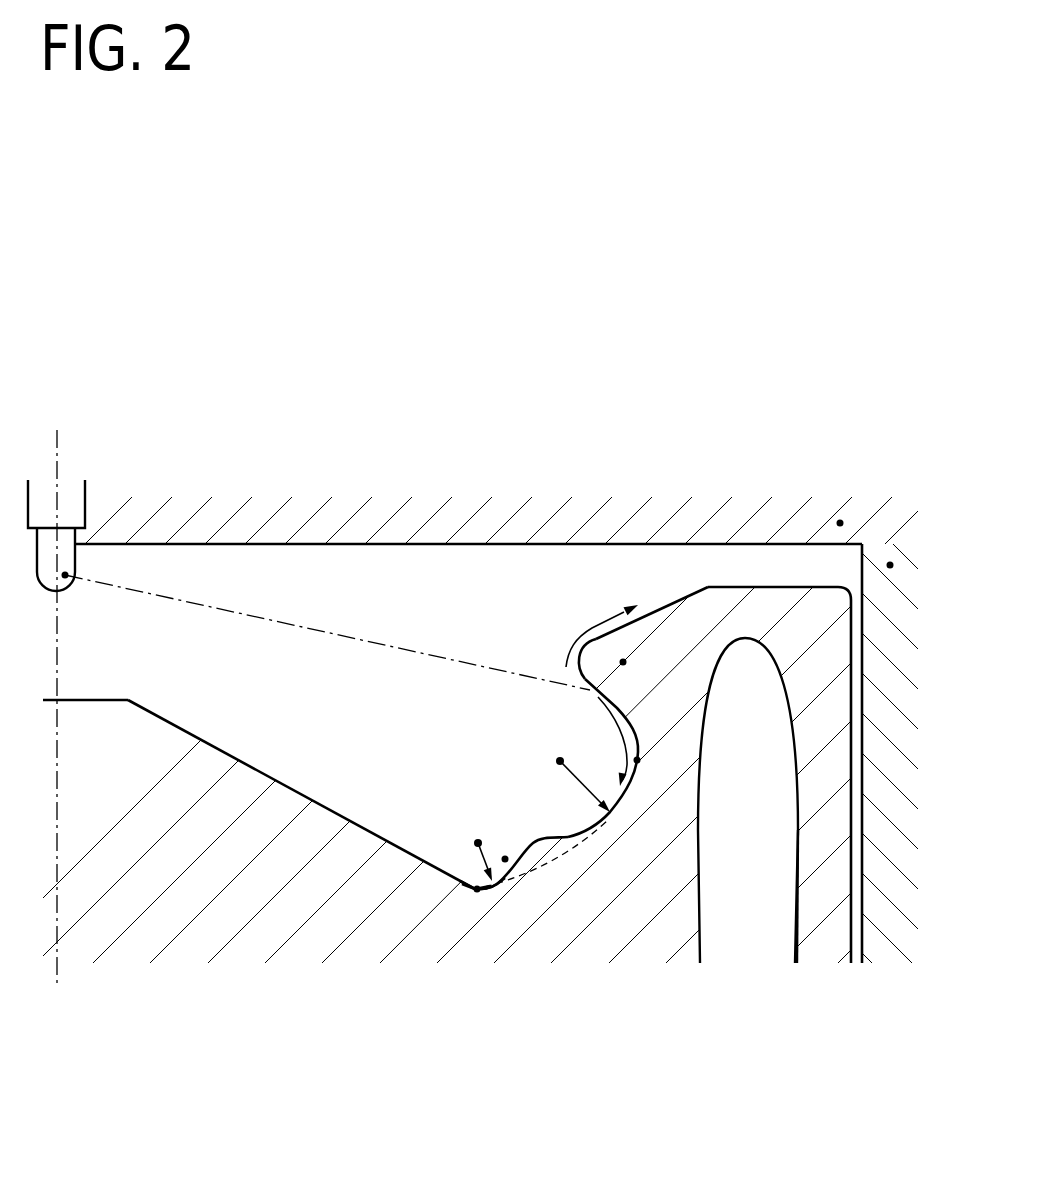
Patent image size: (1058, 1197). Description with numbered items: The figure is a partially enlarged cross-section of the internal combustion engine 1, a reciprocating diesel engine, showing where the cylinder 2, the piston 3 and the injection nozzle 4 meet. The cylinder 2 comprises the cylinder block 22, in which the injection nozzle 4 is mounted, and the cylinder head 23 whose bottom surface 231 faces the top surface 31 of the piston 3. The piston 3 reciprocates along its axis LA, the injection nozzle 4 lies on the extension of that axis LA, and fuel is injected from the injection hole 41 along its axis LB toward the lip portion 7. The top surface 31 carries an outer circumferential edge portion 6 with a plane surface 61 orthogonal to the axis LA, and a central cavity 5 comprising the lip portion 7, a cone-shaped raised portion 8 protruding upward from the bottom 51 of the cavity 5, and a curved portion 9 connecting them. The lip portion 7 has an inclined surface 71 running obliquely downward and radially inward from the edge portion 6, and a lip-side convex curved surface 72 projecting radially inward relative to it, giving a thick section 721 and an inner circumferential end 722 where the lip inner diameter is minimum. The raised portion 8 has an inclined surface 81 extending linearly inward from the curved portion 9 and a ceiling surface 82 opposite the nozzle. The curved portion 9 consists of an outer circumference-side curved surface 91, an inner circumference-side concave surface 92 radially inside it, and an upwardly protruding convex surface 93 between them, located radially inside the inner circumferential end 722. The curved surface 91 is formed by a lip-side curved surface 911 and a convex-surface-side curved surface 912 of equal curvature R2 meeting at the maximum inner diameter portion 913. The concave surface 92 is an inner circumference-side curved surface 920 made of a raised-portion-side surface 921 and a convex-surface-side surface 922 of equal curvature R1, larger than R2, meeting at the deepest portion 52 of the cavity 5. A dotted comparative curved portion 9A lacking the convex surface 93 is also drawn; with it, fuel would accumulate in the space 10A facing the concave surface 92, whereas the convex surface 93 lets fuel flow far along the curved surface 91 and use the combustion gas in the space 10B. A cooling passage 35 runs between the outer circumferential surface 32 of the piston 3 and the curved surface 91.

The internal combustion engine 1 is at (300, 382).
The cylinder 2 is at (503, 708).
The cylinder block 22 is at (890, 565).
The cylinder head 23 is at (840, 523).
The bottom surface 231 is at (555, 543).
The piston 3 is at (529, 758).
The top surface 31 is at (178, 726).
The outer circumferential surface 32 is at (849, 898).
The cooling passage 35 is at (797, 903).
The injection nozzle 4 is at (104, 514).
The injection hole 41 is at (73, 573).
The cavity 5 is at (460, 909).
The bottom 51 is at (472, 887).
The deepest portion 52 is at (478, 892).
The outer circumferential edge portion 6 is at (779, 526).
The plane surface 61 is at (768, 587).
The lip portion 7 is at (575, 565).
The inclined surface 71 is at (677, 600).
The lip-side convex curved surface 72 is at (531, 642).
The section 721 is at (625, 661).
The inner circumferential end 722 is at (566, 672).
The raised portion 8 is at (259, 760).
The inclined surface 81 is at (301, 774).
The ceiling surface 82 is at (88, 698).
The curved portion 9 is at (536, 758).
The outer circumference-side curved surface 91 is at (637, 775).
The curved surface 911 is at (628, 727).
The curved surface 912 is at (635, 790).
The maximum inner diameter portion 913 is at (663, 767).
The inner circumference-side concave surface 92 is at (452, 951).
The inner circumference-side curved surface 920 is at (475, 890).
The surface 921 is at (472, 889).
The surface 922 is at (498, 888).
The convex surface 93 is at (452, 896).
The curved portion 9A is at (565, 860).
The space 10A is at (505, 859).
The space 10B is at (595, 823).
The curvature R1 is at (478, 843).
The curvature R2 is at (560, 761).
The axis LA is at (57, 437).
The axis LB is at (379, 641).